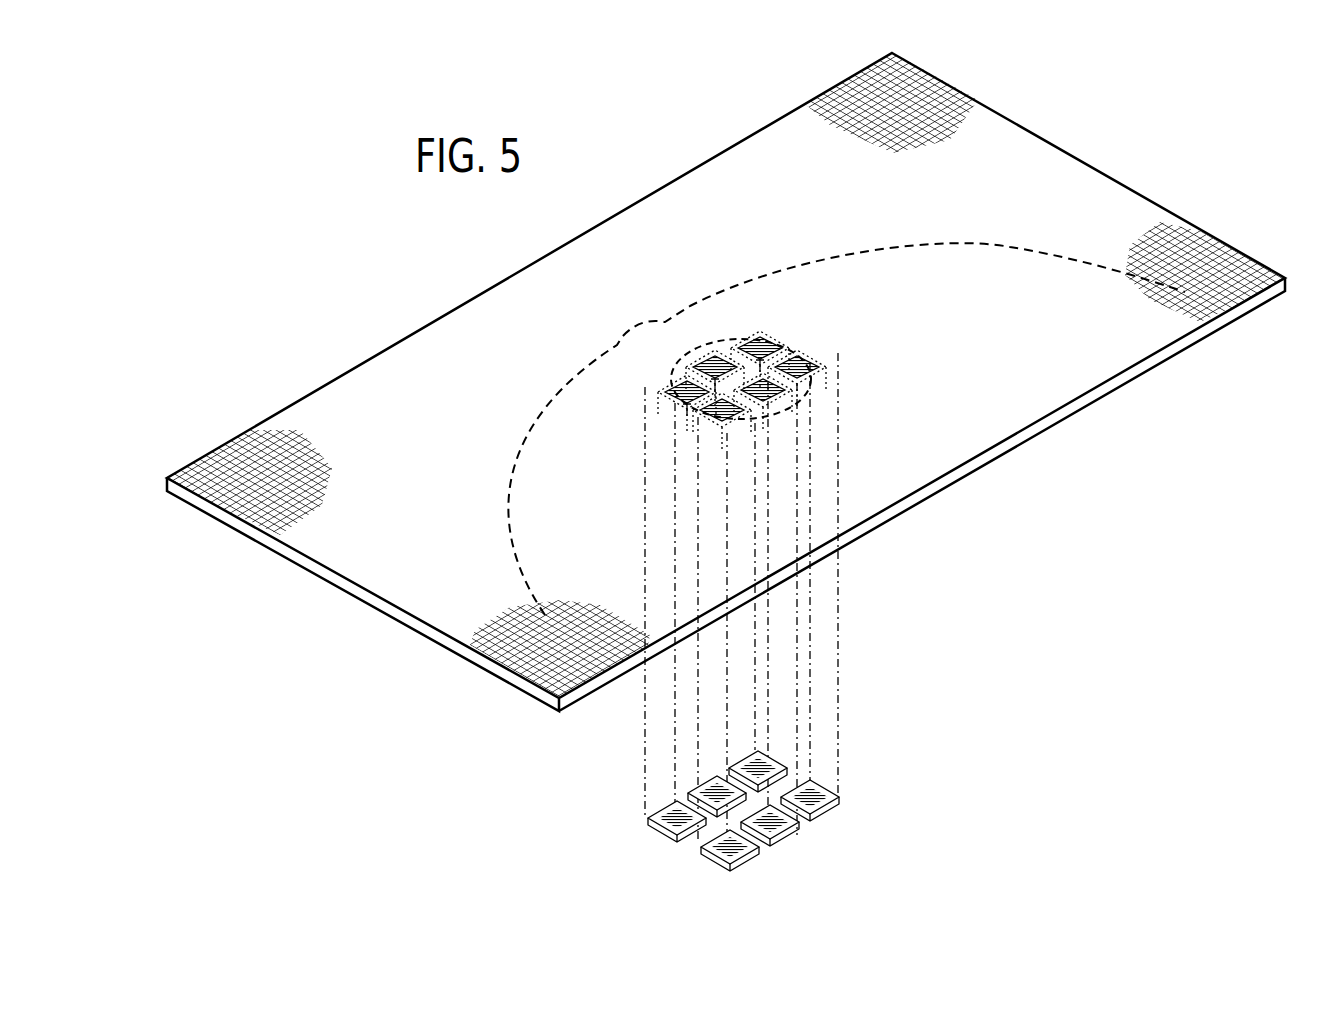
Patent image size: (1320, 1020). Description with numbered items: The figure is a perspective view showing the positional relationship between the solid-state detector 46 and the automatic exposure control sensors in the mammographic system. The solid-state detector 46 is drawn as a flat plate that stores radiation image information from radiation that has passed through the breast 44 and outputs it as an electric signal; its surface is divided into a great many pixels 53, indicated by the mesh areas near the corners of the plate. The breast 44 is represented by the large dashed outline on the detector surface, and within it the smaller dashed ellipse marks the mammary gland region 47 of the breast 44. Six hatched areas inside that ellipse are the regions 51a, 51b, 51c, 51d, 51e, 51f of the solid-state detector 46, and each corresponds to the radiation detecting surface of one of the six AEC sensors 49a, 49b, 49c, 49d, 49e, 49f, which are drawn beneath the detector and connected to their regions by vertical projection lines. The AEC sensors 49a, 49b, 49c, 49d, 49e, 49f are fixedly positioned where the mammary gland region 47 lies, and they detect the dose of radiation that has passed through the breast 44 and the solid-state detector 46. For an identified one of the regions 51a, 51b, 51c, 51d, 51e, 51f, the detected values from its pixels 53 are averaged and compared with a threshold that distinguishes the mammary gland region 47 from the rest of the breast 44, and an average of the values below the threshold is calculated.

The breast 44 is at (582, 375).
The solid-state detector 46 is at (470, 326).
The mammary gland region 47 is at (797, 341).
The AEC sensor 49a is at (823, 792).
The AEC sensor 49b is at (790, 825).
The AEC sensor 49c is at (718, 858).
The AEC sensor 49d is at (740, 753).
The AEC sensor 49e is at (690, 785).
The AEC sensor 49f is at (660, 818).
The region of the solid-state detector 51a is at (800, 360).
The region of the solid-state detector 51b is at (775, 393).
The region of the solid-state detector 51c is at (735, 414).
The region of the solid-state detector 51d is at (761, 338).
The region of the solid-state detector 51e is at (712, 360).
The region of the solid-state detector 51f is at (680, 385).
The pixel 53 is at (232, 460).